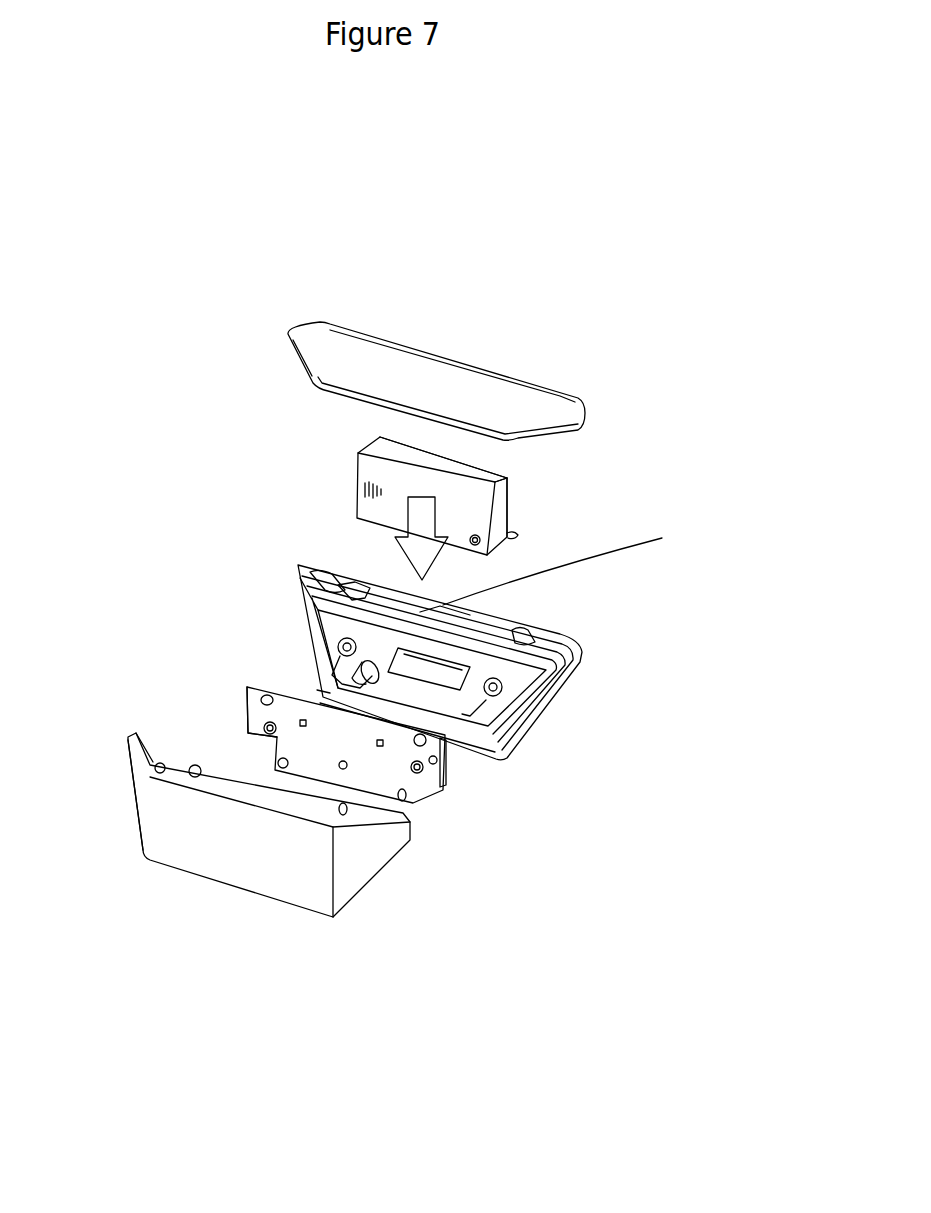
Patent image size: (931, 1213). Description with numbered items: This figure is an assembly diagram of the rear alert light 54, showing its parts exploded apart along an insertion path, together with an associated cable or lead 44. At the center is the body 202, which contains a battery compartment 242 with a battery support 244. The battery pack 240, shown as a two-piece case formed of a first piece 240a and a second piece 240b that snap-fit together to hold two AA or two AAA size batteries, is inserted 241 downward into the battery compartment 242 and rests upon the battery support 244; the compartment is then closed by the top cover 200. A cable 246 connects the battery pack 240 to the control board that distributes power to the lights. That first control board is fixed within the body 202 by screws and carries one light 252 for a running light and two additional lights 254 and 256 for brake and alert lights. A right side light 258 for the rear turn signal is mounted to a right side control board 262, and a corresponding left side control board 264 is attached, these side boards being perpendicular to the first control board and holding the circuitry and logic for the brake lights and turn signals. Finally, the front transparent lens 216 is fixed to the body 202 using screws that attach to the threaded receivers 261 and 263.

The cable 44 is at (647, 553).
The rear alert light 54 is at (252, 432).
The top cover 200 is at (443, 367).
The body 202 is at (563, 683).
The front transparent lens 216 is at (192, 855).
The battery pack 240 is at (343, 502).
The battery pack case piece 240a is at (508, 478).
The battery pack case piece 240b is at (495, 505).
The insertion 241 is at (397, 548).
The battery compartment 242 is at (417, 647).
The battery support 244 is at (467, 675).
The cable 246 is at (512, 535).
The light 252 is at (343, 765).
The light 254 is at (303, 723).
The light 256 is at (382, 745).
The right side light 258 is at (447, 767).
The threaded receiver 261 is at (193, 767).
The right side control board 262 is at (432, 760).
The threaded receiver 263 is at (343, 807).
The left side control board 264 is at (247, 713).